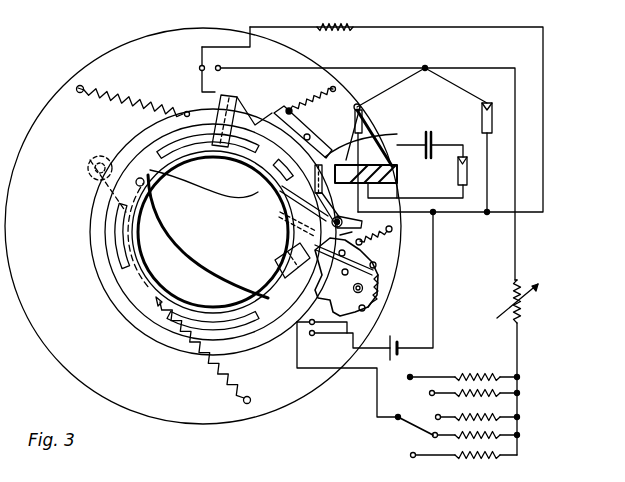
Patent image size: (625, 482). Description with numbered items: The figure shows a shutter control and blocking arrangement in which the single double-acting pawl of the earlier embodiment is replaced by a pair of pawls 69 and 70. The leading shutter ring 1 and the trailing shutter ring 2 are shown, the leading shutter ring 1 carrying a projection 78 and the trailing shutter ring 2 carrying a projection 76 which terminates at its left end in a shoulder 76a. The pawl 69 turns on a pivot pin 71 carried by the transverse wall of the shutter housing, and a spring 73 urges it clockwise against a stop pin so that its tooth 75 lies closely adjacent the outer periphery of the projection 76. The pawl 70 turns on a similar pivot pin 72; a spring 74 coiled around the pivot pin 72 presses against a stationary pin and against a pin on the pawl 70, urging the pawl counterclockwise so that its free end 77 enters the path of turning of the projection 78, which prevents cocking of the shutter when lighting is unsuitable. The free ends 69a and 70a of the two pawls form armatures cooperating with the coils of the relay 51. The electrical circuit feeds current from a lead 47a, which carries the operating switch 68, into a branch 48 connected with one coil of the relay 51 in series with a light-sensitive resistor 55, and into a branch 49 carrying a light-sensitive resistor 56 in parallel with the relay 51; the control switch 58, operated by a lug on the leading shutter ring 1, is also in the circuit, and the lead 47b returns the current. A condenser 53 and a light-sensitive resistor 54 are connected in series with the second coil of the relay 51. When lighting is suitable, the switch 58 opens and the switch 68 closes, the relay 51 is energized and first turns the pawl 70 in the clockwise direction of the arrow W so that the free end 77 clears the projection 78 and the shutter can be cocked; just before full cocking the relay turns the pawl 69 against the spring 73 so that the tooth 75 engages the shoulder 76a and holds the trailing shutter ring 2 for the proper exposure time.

The leading shutter ring 1 is at (171, 162).
The trailing shutter ring 2 is at (113, 291).
The lead 47a is at (433, 292).
The lead 47b is at (517, 266).
The branch 48 is at (372, 140).
The branch 49 is at (488, 160).
The relay 51 is at (397, 176).
The condenser 53 is at (436, 130).
The light-sensitive resistor 54 is at (468, 188).
The light-sensitive resistor 55 is at (357, 104).
The light-sensitive resistor 56 is at (481, 118).
The control switch 58 is at (199, 69).
The operating switch 68 is at (333, 337).
The pawl 69 is at (320, 162).
The free end 69a is at (362, 140).
The pawl 70 is at (283, 252).
The free end 70a is at (283, 216).
The pivot pin 71 is at (304, 108).
The pivot pin 72 is at (347, 212).
The spring 73 is at (330, 89).
The spring 74 is at (392, 237).
The tooth 75 is at (274, 126).
The projection 76 is at (256, 126).
The shoulder 76a is at (252, 124).
The free end 77 is at (280, 190).
The projection 78 is at (270, 168).
The arrow W is at (344, 277).